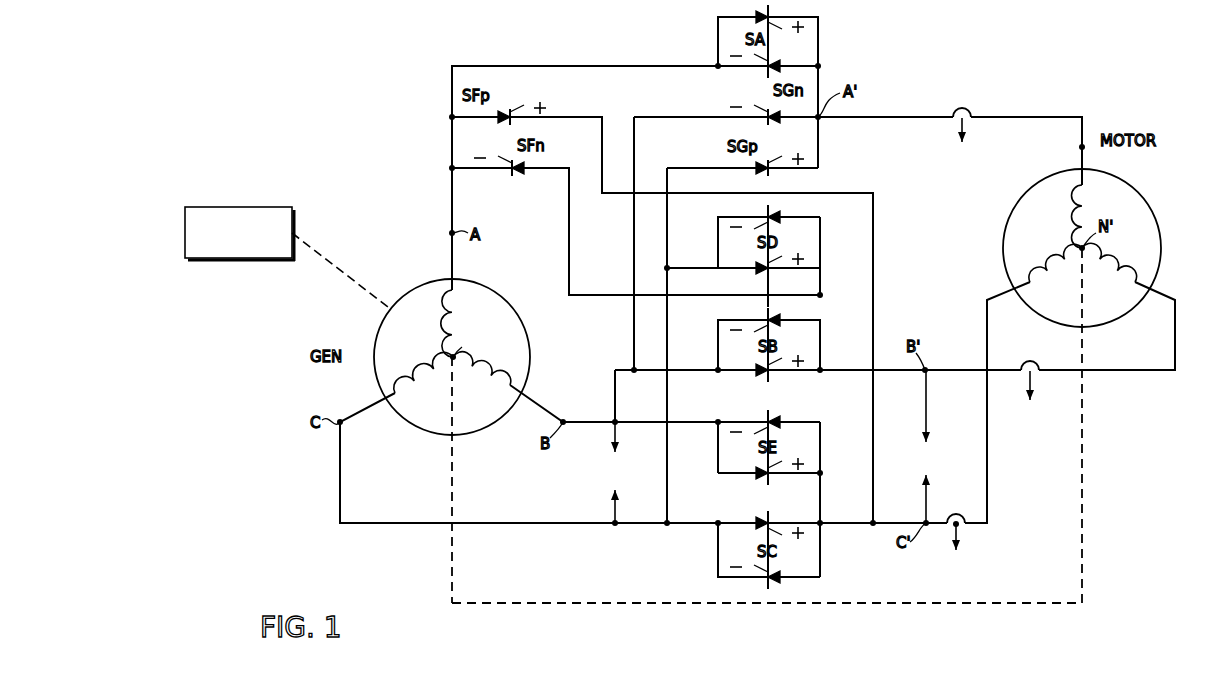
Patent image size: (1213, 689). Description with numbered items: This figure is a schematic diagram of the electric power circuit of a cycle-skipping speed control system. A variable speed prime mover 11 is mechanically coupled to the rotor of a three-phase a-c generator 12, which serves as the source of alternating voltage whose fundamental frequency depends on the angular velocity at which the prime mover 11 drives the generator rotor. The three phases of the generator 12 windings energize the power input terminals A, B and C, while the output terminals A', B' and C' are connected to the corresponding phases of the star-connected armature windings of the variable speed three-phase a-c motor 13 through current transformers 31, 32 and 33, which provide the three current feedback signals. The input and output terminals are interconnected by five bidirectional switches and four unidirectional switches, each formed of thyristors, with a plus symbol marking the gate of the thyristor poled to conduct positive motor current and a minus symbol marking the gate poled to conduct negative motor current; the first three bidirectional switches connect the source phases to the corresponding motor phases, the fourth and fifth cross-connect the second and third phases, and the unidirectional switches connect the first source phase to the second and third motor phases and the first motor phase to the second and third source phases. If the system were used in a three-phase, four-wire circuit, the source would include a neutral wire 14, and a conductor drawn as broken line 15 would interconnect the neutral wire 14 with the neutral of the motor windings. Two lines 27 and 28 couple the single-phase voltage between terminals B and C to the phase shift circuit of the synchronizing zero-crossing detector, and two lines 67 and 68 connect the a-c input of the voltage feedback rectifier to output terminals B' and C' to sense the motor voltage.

The prime mover 11 is at (246, 207).
The 3-phase a-c generator 12 is at (514, 304).
The variable speed 3-phase a-c motor 13 is at (1131, 186).
The neutral wire 14 is at (452, 478).
The broken line conductor 15 is at (1082, 545).
The line 27 is at (618, 436).
The line 28 is at (618, 508).
The current transformer 31 is at (956, 108).
The current transformer 32 is at (1038, 362).
The current transformer 33 is at (966, 528).
The line 67 is at (927, 412).
The line 68 is at (927, 502).